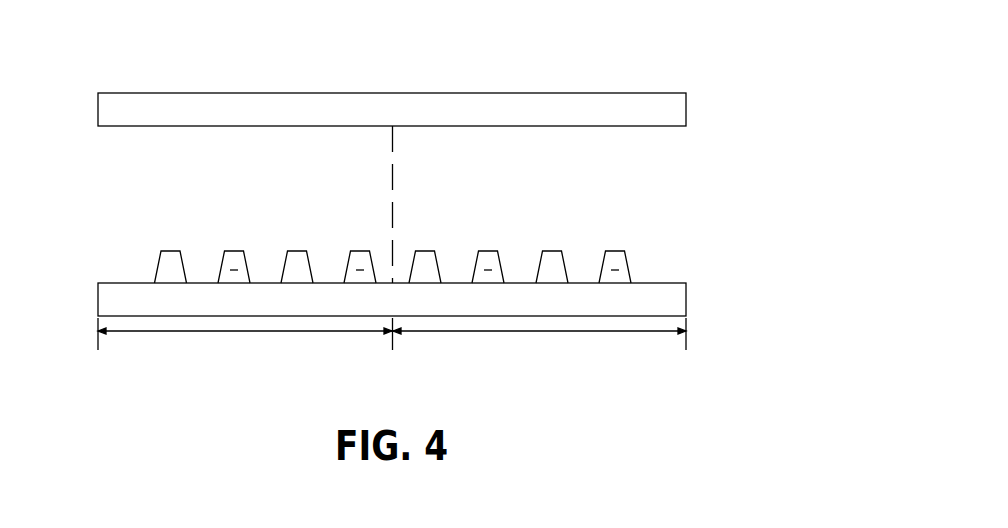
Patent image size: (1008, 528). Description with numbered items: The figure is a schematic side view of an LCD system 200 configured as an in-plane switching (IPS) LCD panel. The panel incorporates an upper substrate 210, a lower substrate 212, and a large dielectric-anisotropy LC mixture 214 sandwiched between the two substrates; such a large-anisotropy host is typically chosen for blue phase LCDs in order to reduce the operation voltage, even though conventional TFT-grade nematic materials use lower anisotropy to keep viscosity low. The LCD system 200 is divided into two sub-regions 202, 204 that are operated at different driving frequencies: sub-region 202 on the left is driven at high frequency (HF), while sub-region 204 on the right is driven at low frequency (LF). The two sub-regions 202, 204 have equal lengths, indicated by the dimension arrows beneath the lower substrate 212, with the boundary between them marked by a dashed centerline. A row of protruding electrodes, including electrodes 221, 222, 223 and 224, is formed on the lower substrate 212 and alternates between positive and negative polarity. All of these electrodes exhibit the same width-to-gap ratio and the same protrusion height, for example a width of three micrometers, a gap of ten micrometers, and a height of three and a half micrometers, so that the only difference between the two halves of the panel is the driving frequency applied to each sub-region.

The LCD system 200 is at (722, 87).
The sub-region 202 is at (248, 78).
The sub-region 204 is at (520, 78).
The upper substrate 210 is at (98, 110).
The lower substrate 212 is at (97, 300).
The large Δε LC mixture 214 is at (663, 205).
The electrode 221 is at (297, 250).
The electrode 222 is at (358, 250).
The electrode 223 is at (424, 250).
The electrode 224 is at (488, 250).